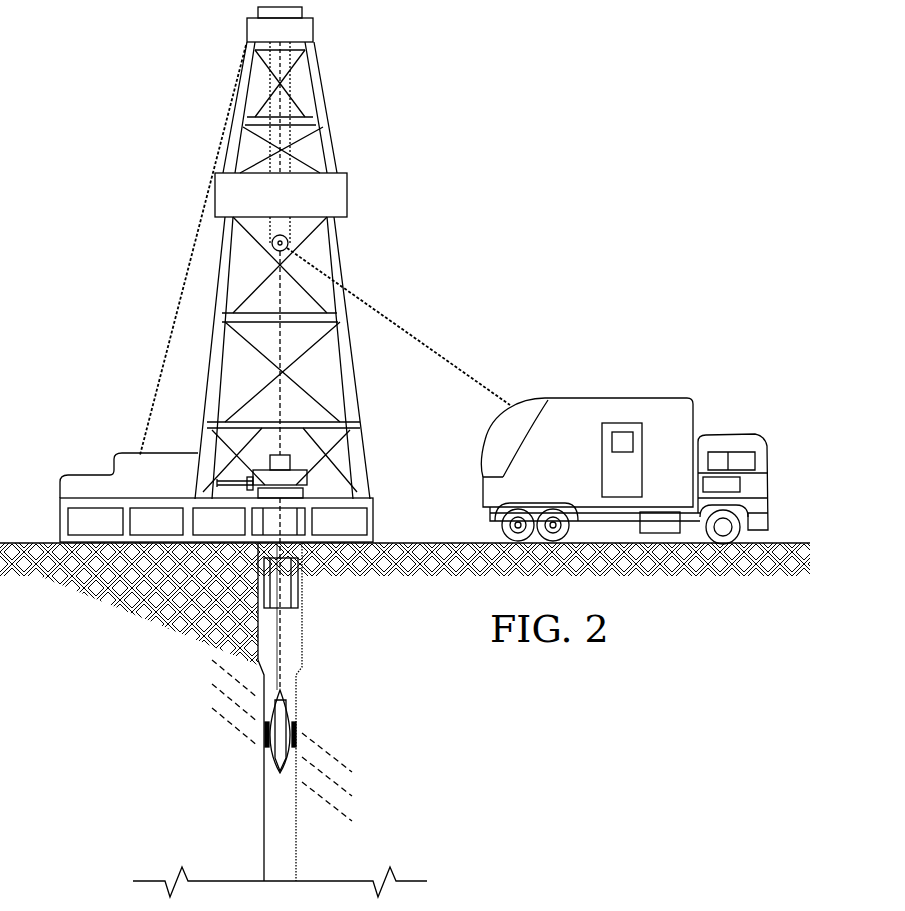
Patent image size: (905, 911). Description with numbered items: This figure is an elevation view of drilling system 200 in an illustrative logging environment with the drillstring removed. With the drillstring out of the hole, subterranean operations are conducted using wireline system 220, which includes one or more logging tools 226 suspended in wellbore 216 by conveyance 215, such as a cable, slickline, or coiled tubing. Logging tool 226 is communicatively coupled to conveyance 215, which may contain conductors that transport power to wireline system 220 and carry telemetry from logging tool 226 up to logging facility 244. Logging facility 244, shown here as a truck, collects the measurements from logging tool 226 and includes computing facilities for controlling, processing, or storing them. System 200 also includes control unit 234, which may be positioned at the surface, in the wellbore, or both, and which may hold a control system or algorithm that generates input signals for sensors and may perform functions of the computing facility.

The drilling system 200 is at (512, 201).
The conveyance 215 is at (298, 607).
The wellbore 216 is at (296, 650).
The wireline system 220 is at (283, 717).
The logging tool 226 is at (268, 737).
The control unit 234 is at (292, 458).
The logging facility 244 is at (619, 398).